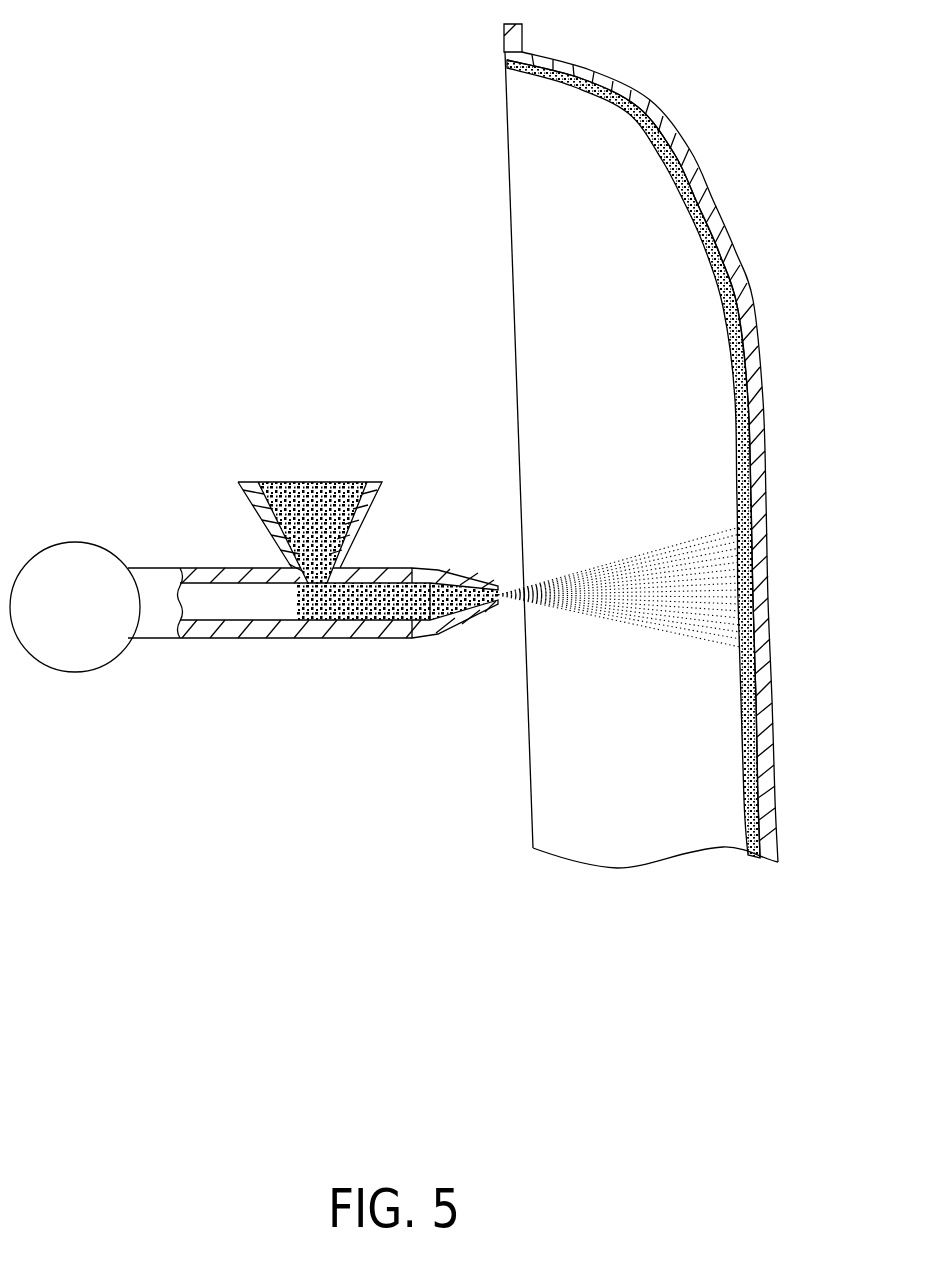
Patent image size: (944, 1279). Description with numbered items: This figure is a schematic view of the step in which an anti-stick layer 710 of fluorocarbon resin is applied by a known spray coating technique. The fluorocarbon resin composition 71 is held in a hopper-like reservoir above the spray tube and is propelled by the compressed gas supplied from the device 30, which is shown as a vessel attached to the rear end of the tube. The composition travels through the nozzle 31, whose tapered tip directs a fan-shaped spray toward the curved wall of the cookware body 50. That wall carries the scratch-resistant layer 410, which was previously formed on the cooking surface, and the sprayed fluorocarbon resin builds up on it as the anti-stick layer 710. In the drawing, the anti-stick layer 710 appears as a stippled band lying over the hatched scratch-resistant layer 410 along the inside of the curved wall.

The device 30 is at (80, 557).
The nozzle 31 is at (242, 640).
The fluorocarbon resin composition 71 is at (308, 482).
The screen panel 50 is at (688, 446).
The scratch-resistant layer 410 is at (748, 398).
The anti-stick layer 710 is at (737, 437).